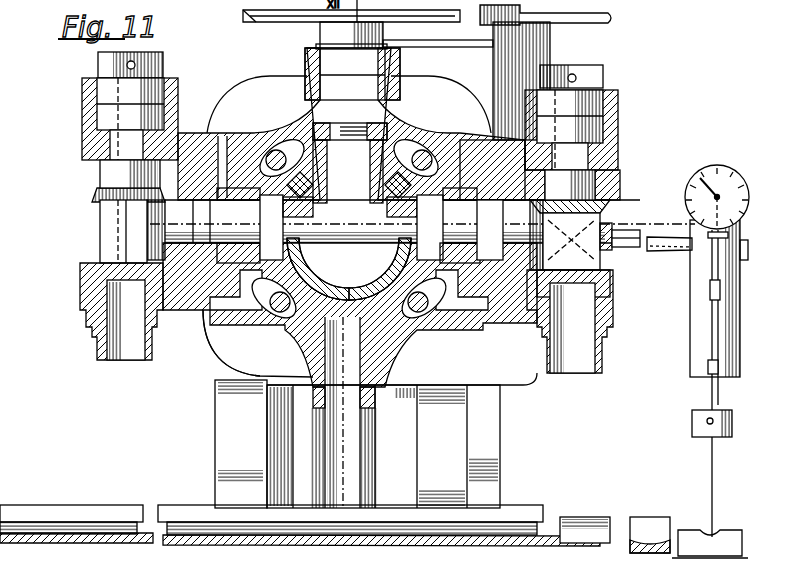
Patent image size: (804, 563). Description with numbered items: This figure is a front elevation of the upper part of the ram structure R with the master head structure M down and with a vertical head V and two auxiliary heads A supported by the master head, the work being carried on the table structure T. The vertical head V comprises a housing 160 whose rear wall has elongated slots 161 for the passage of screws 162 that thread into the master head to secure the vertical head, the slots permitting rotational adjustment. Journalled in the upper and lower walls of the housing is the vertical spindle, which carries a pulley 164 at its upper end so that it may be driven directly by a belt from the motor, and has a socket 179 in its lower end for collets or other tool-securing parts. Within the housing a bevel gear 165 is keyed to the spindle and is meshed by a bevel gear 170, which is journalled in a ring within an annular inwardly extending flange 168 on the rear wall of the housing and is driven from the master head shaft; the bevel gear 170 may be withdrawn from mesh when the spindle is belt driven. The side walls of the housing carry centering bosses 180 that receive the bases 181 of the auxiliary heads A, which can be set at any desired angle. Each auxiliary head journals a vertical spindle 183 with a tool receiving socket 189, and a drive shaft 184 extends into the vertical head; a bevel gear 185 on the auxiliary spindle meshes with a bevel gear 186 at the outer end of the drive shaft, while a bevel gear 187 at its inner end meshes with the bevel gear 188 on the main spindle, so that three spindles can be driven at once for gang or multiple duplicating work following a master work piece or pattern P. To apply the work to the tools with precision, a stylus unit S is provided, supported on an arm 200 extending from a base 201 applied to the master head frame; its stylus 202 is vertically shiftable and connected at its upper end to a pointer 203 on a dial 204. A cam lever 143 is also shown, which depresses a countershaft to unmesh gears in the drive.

The cam lever 143 is at (605, 22).
The housing 160 is at (420, 337).
The elongated slots 161 is at (428, 168).
The screws 162 is at (422, 152).
The pulley 164 is at (295, 22).
The bevel gear 165 is at (395, 125).
The annular inwardly extending flange 168 is at (347, 163).
The bevel gear 170 is at (380, 285).
The socket 179 is at (348, 405).
The centering bosses 180 is at (233, 187).
The bases 181 is at (207, 133).
The vertical spindle 183 is at (125, 233).
The drive shaft 184 is at (246, 143).
The bevel gear 185 is at (93, 193).
The bevel gear 186 is at (150, 215).
The bevel gear 187 is at (300, 288).
The bevel gear 188 is at (300, 78).
The tool receiving socket 189 is at (117, 354).
The arm 200 is at (663, 243).
The base 201 is at (605, 256).
The stylus 202 is at (710, 398).
The pointer 203 is at (716, 194).
The dial 204 is at (737, 182).
The auxiliary heads A is at (618, 155).
The vertical head V is at (262, 338).
The ram structure R is at (232, 424).
The master head structure M is at (513, 372).
The stylus unit S is at (703, 317).
The table structure T is at (597, 530).
The master work piece or pattern P is at (722, 540).